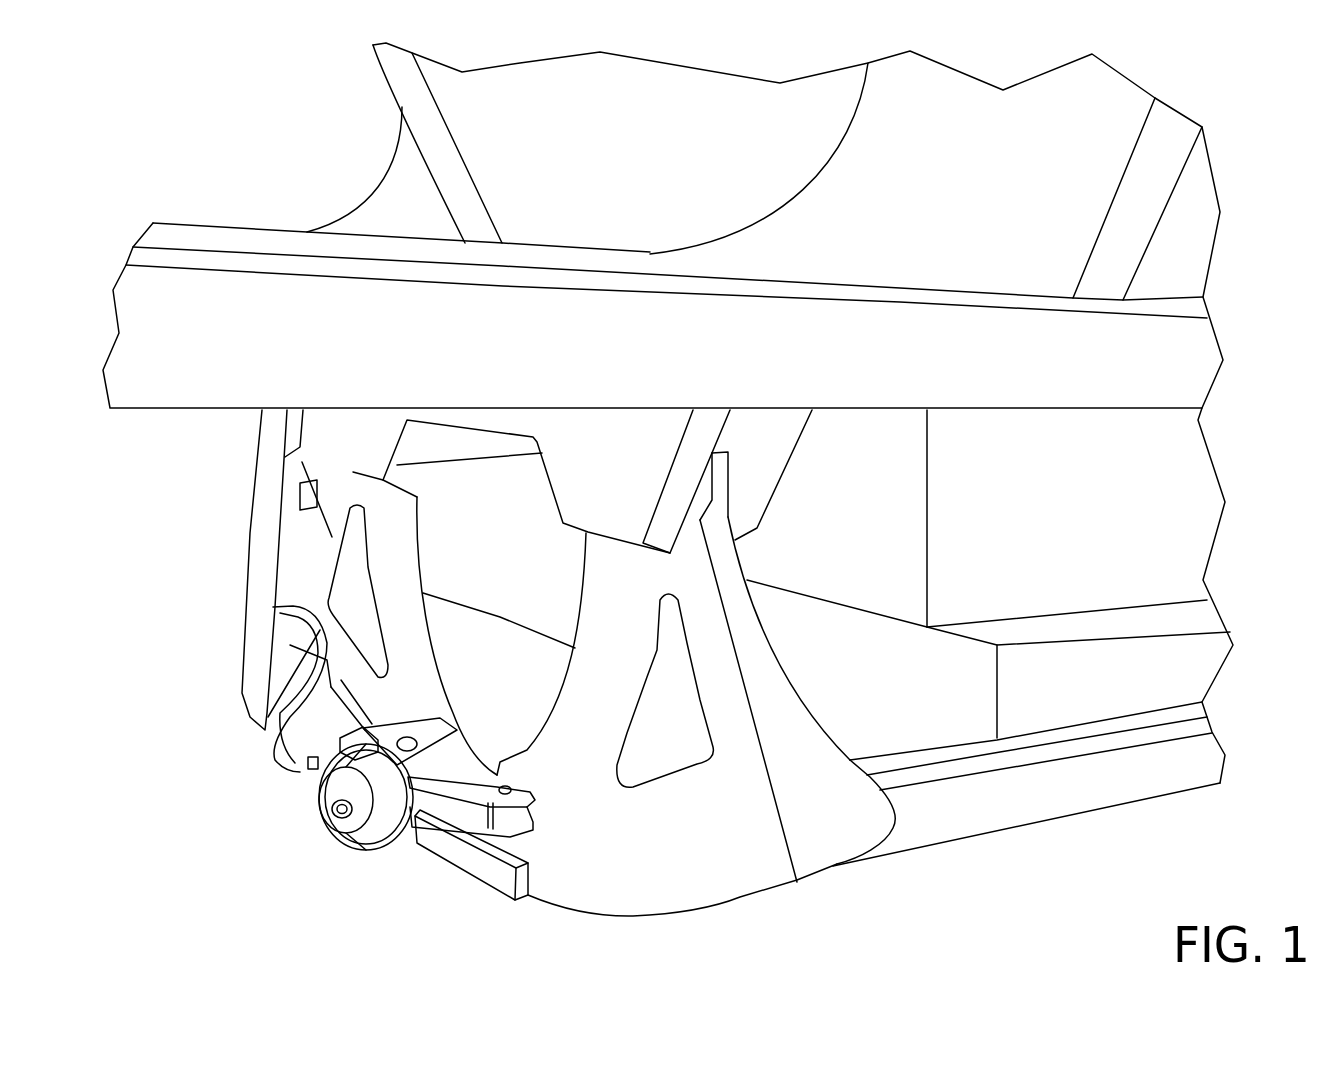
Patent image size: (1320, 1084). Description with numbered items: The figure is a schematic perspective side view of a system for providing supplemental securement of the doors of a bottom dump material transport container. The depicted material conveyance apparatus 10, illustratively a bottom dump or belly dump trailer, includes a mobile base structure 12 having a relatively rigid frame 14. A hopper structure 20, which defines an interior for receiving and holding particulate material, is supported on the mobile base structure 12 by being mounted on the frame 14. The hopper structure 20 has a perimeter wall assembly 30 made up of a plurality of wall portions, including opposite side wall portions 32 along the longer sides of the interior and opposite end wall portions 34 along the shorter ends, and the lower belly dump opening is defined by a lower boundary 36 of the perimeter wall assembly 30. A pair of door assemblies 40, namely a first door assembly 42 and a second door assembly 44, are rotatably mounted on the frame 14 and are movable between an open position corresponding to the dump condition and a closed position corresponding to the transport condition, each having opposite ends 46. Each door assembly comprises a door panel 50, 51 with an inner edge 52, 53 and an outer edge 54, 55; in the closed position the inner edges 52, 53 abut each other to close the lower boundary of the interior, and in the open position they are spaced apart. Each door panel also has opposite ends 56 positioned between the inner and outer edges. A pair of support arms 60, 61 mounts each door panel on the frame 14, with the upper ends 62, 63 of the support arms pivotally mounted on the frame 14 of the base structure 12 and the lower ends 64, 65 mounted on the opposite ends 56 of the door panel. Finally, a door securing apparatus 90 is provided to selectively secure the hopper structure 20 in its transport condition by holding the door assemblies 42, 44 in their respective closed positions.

The material conveyance apparatus 10 is at (1185, 90).
The mobile base structure 12 is at (1188, 312).
The frame 14 is at (1170, 387).
The hopper structure 20 is at (1135, 247).
The perimeter wall assembly 30 is at (1140, 177).
The side wall portions 32 is at (1170, 488).
The end wall portions 34 is at (558, 173).
The lower boundary 36 is at (1175, 668).
The door assemblies 40 is at (357, 843).
The first door assembly 42 is at (293, 544).
The second door assembly 44 is at (1049, 799).
The opposite ends 46 is at (575, 684).
The door panel 50 is at (1026, 824).
The door panel 51 is at (1010, 832).
The inner edge 52 is at (442, 867).
The inner edge 53 is at (463, 882).
The outer edge 54 is at (1081, 784).
The outer edge 55 is at (1130, 788).
The opposite ends 56 is at (815, 860).
The support arm 60 is at (310, 595).
The support arm 61 is at (737, 697).
The upper end 62 is at (783, 487).
The upper end 63 is at (703, 517).
The lower end 64 is at (695, 901).
The lower end 65 is at (740, 897).
The door securing apparatus 90 is at (376, 821).